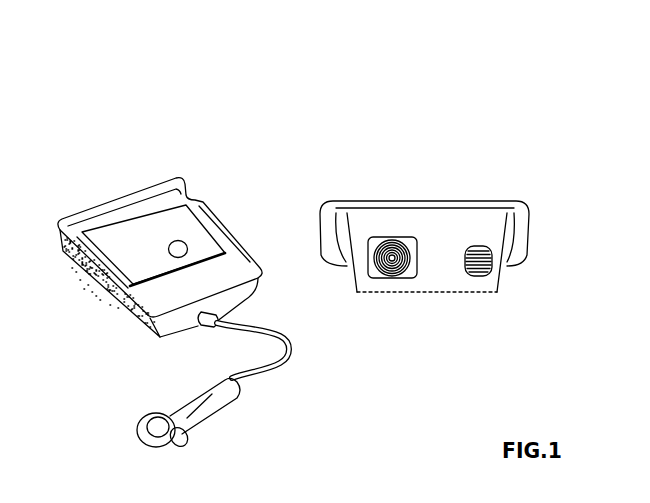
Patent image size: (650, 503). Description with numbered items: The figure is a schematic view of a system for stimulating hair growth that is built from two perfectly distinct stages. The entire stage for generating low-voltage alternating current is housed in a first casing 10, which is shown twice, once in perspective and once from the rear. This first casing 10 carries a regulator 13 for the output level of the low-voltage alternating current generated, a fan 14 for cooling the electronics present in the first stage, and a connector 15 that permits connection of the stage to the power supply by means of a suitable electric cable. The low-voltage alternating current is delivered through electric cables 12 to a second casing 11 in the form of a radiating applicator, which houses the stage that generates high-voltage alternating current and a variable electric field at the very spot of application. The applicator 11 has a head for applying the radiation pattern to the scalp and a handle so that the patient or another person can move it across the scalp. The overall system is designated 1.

The system 1 is at (210, 113).
The first casing 10 is at (125, 173).
The second casing 11 is at (205, 422).
The electric cables 12 is at (297, 350).
The regulator 13 is at (187, 242).
The fan 14 is at (403, 283).
The connector 15 is at (478, 282).